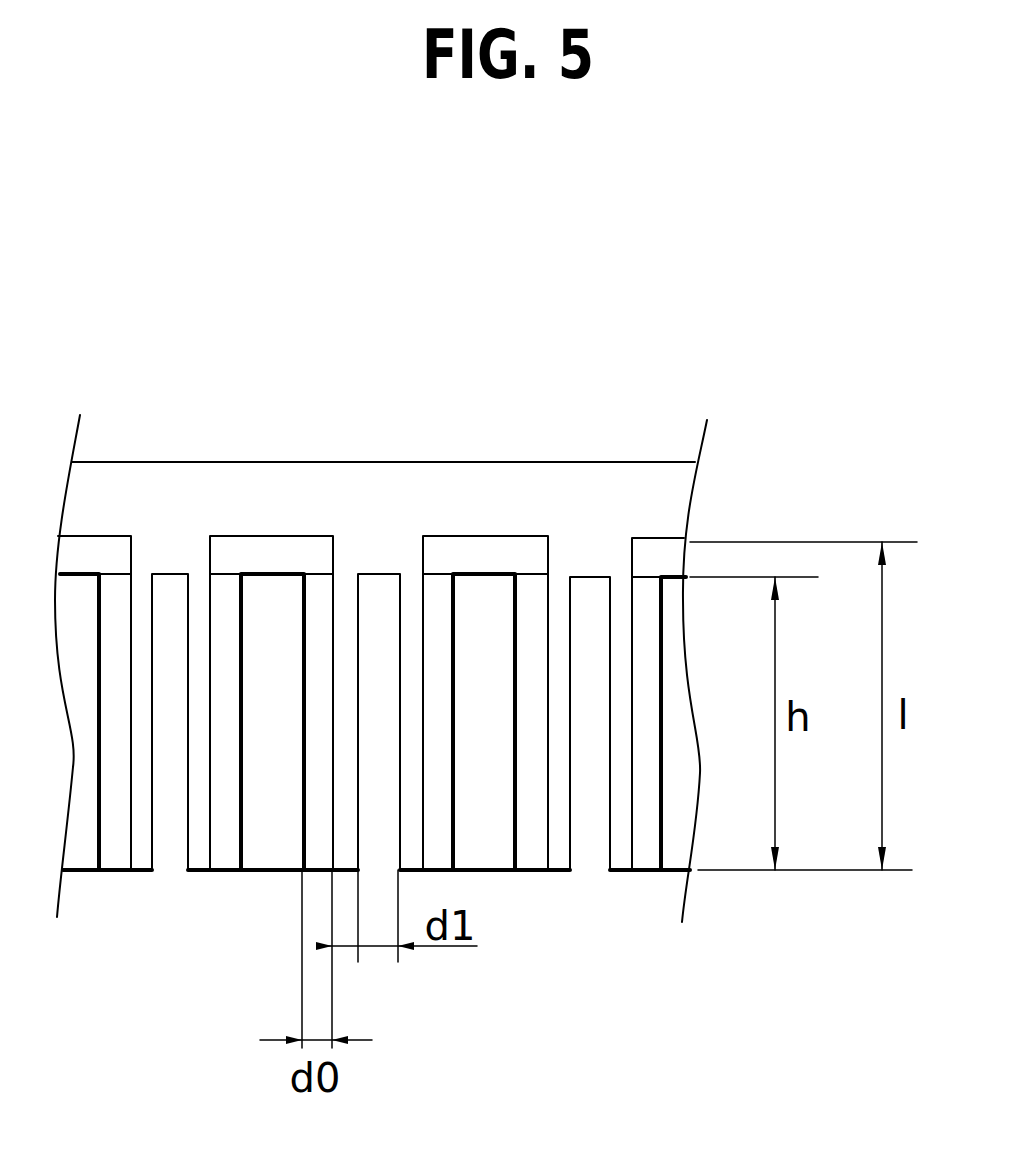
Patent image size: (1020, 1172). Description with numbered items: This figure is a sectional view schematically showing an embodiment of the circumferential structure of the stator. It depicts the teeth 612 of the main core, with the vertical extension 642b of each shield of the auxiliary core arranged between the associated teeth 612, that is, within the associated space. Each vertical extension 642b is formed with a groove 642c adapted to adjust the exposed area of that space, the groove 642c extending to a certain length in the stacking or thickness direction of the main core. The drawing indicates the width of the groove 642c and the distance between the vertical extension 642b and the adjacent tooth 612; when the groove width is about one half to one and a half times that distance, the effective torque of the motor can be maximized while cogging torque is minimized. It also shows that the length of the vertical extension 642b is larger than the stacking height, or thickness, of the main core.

The vertical extension 642b is at (172, 552).
The groove 642c is at (378, 600).
The tooth 612 is at (270, 852).